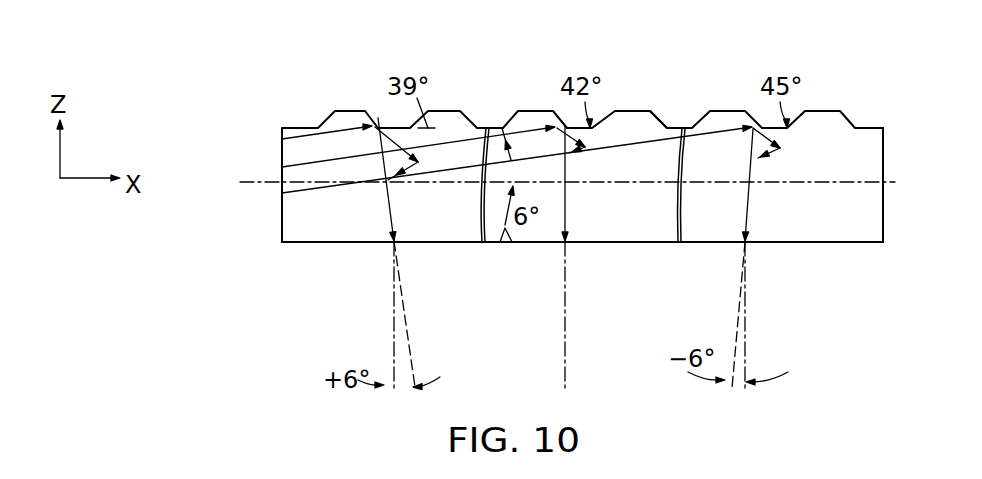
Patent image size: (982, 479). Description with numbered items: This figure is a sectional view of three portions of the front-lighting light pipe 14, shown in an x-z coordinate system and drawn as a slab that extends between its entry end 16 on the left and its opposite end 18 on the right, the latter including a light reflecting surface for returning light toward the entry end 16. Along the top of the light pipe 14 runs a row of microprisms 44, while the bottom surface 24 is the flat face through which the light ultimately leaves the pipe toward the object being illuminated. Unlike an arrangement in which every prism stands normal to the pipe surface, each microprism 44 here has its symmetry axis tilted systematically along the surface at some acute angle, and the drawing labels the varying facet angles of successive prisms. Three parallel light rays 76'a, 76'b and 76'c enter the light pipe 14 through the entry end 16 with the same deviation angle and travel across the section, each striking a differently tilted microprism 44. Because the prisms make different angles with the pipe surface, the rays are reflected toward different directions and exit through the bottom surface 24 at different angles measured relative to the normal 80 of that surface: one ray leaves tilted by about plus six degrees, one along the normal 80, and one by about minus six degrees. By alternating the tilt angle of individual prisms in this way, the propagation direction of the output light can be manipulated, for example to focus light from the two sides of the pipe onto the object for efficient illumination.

The front-lighting light pipe 14 is at (582, 279).
The entry end 16 is at (283, 212).
The end 18 is at (855, 185).
The microprism 44 is at (683, 95).
The bottom surface 24 is at (583, 205).
The normal 80 is at (543, 258).
The parallel light ray 76'a is at (308, 130).
The parallel light ray 76'b is at (381, 146).
The parallel light ray 76'c is at (490, 184).